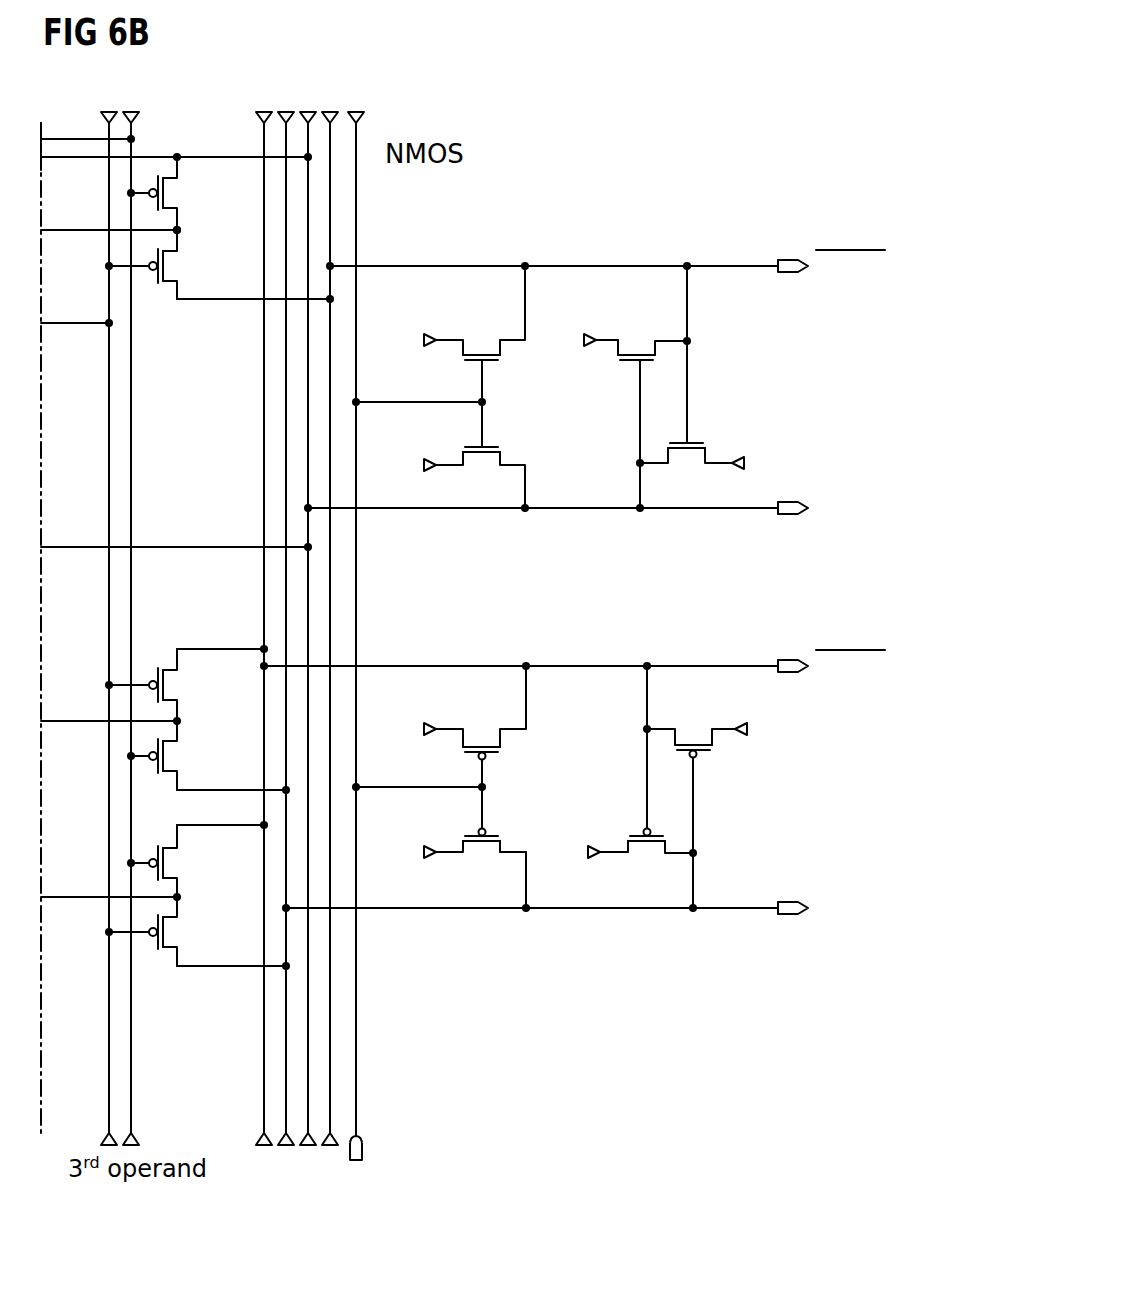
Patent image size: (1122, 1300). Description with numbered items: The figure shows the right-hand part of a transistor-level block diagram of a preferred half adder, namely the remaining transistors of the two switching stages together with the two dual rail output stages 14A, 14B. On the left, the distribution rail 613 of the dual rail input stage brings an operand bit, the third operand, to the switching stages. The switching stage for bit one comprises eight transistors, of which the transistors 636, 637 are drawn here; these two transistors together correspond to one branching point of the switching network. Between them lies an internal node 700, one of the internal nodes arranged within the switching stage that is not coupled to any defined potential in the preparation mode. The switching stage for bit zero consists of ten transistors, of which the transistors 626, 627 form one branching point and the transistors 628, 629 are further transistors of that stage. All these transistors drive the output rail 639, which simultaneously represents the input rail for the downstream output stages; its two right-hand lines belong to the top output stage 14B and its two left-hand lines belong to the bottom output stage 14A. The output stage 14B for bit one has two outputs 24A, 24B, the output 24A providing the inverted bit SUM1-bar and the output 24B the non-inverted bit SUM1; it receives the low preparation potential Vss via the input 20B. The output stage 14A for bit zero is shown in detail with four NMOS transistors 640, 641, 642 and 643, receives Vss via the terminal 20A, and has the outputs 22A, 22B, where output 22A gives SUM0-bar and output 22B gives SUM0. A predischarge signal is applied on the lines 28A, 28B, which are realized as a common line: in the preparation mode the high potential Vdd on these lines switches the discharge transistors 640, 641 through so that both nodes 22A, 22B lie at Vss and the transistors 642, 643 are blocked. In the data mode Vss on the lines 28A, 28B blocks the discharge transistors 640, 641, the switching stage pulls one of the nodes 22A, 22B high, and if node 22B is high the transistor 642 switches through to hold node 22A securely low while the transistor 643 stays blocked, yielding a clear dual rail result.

The distribution rail 613 is at (140, 103).
The output rail 639 is at (335, 103).
The transistor 636 is at (178, 198).
The transistor 637 is at (178, 270).
The internal node 700 is at (181, 231).
The transistor 626 is at (178, 690).
The transistor 627 is at (178, 762).
The transistor 628 is at (178, 868).
The transistor 629 is at (178, 937).
The preparation potential input 20B is at (452, 340).
The preparation potential terminal 20A is at (450, 729).
The discharge transistor 640 is at (481, 745).
The discharge transistor 641 is at (480, 853).
The transistor 642 is at (692, 745).
The transistor 643 is at (645, 853).
The output 24A is at (726, 265).
The output 24B is at (745, 512).
The output 22A is at (727, 665).
The output 22B is at (729, 906).
The output stage 14B is at (765, 388).
The output stage 14A is at (765, 827).
The predischarge signal line 28A is at (482, 636).
The predischarge signal line 28B is at (356, 1075).